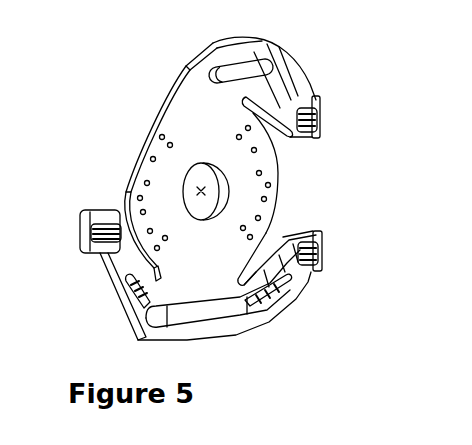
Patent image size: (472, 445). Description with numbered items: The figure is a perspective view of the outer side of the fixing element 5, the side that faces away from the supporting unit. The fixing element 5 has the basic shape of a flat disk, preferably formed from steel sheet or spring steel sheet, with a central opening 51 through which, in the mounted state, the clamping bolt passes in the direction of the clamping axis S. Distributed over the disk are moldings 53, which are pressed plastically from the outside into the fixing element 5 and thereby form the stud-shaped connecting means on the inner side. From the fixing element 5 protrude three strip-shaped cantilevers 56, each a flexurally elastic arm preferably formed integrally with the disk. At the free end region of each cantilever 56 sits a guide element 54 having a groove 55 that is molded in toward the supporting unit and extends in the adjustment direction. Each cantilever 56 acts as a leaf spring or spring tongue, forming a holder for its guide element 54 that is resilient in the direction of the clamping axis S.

The fixing element 5 is at (141, 78).
The opening 51 is at (215, 184).
The moldings 53 is at (151, 159).
The guide elements 54 is at (318, 117).
The groove 55 is at (311, 107).
The cantilever 56 is at (289, 70).
The clamping axis S is at (199, 190).